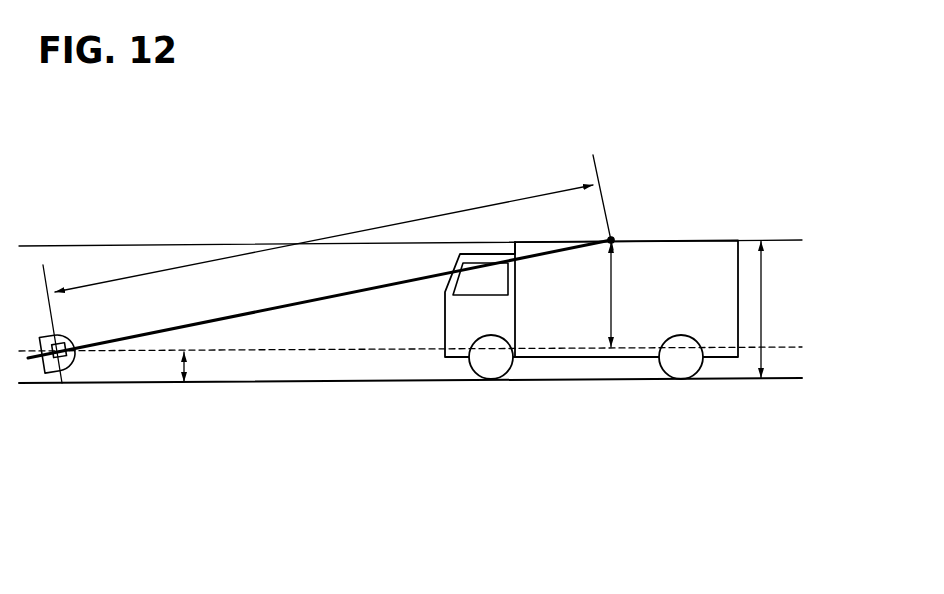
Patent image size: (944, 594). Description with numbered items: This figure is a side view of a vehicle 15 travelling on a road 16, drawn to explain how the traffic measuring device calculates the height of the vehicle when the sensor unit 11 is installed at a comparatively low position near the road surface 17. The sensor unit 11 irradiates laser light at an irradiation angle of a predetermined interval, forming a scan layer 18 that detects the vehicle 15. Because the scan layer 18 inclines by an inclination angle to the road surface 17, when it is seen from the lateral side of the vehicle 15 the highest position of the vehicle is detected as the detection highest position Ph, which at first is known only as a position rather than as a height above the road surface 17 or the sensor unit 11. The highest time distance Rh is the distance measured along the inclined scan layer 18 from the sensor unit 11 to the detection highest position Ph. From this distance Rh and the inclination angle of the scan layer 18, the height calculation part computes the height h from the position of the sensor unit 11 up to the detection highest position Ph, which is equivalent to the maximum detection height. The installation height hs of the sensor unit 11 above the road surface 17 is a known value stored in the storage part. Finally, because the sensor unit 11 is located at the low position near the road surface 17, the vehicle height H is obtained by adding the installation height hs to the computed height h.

The sensor unit 11 is at (62, 383).
The vehicle 15 is at (695, 241).
The road 16 is at (370, 382).
The road surface 17 is at (768, 375).
The scan layer 18 is at (362, 288).
The highest time distance Rh is at (207, 262).
The detection highest position Ph is at (613, 240).
The height h is at (613, 292).
The vehicle height H is at (761, 300).
The installation height hs is at (187, 368).